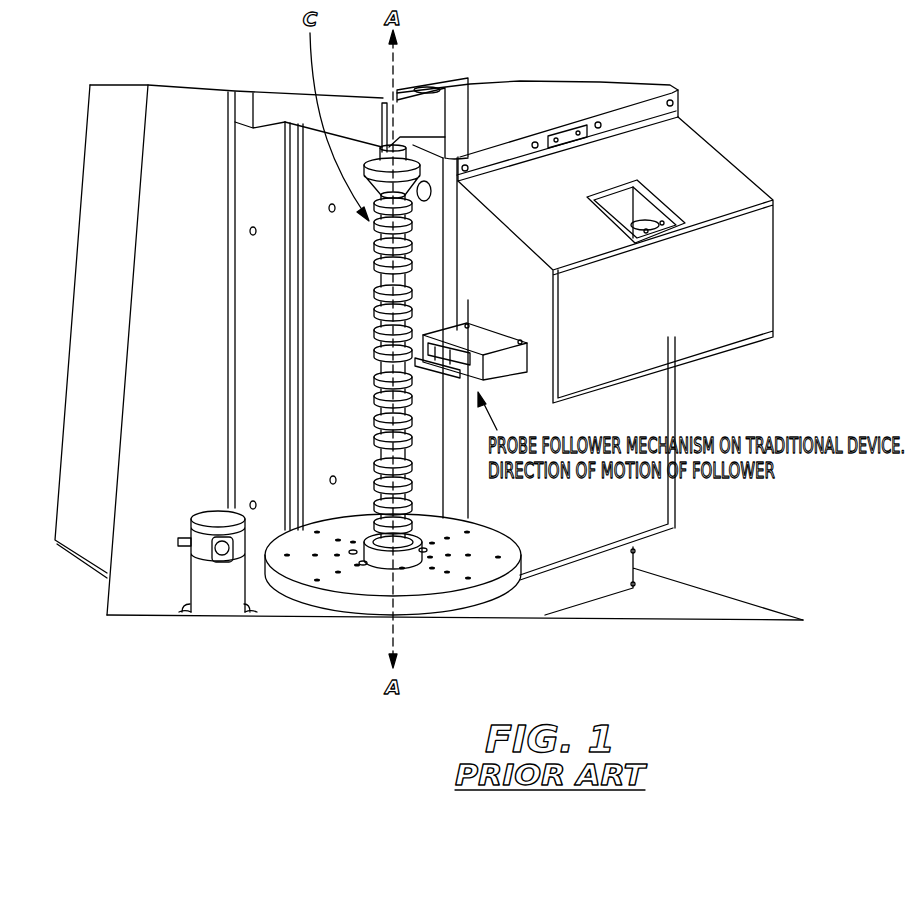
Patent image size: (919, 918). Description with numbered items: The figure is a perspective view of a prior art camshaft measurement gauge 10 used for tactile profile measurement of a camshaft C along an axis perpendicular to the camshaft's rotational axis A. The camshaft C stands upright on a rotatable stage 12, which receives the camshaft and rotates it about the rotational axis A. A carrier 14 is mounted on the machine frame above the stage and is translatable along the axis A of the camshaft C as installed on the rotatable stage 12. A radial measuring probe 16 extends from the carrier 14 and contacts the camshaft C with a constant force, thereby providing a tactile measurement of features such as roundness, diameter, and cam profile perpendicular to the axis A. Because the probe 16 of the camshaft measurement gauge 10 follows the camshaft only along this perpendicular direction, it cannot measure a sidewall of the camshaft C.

The camshaft measurement gauge 10 is at (813, 63).
The rotatable stage 12 is at (300, 598).
The carrier 14 is at (772, 233).
The radial measuring probe 16 is at (534, 336).